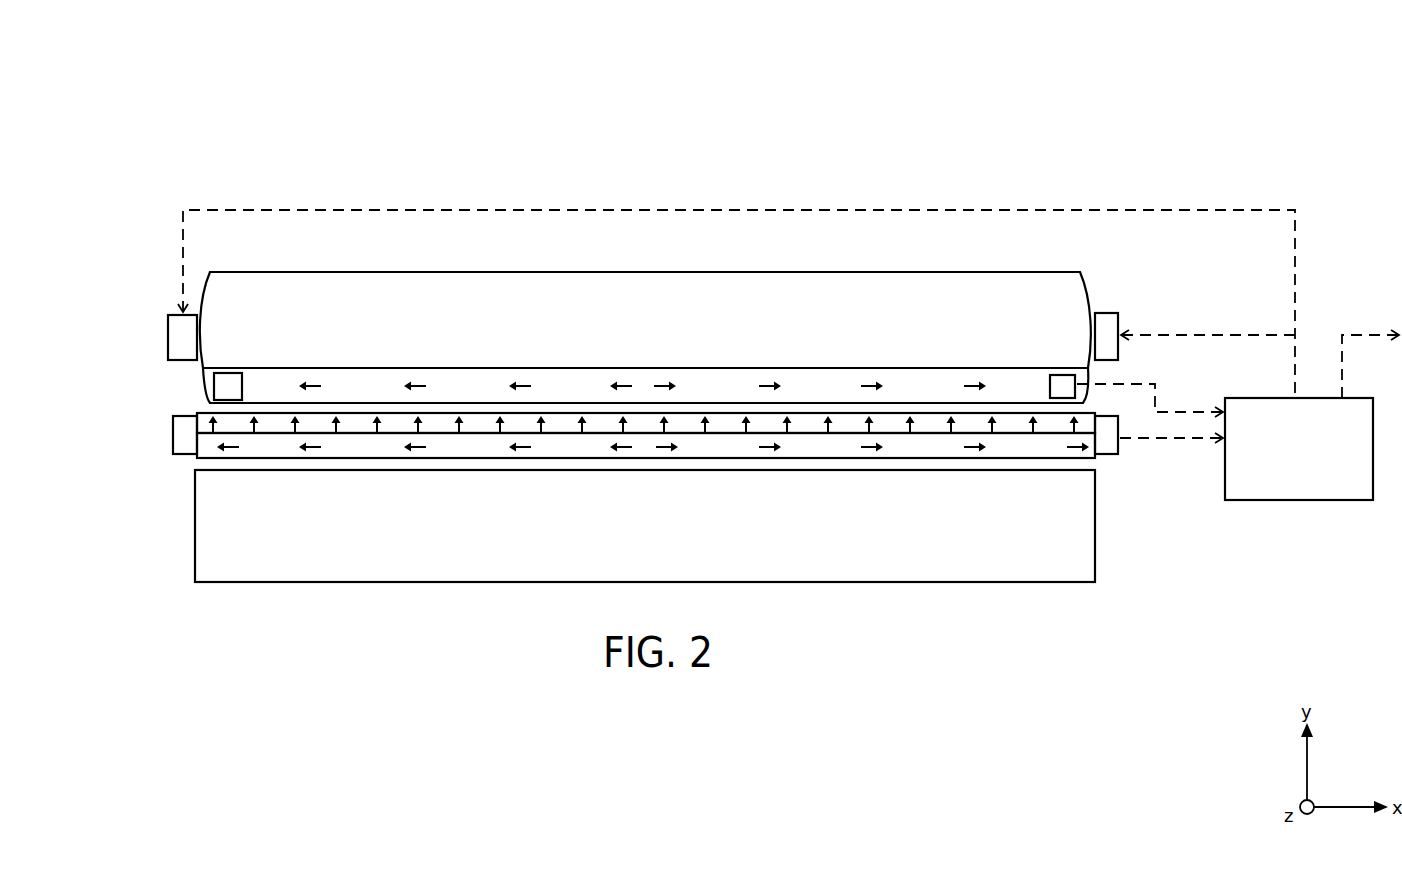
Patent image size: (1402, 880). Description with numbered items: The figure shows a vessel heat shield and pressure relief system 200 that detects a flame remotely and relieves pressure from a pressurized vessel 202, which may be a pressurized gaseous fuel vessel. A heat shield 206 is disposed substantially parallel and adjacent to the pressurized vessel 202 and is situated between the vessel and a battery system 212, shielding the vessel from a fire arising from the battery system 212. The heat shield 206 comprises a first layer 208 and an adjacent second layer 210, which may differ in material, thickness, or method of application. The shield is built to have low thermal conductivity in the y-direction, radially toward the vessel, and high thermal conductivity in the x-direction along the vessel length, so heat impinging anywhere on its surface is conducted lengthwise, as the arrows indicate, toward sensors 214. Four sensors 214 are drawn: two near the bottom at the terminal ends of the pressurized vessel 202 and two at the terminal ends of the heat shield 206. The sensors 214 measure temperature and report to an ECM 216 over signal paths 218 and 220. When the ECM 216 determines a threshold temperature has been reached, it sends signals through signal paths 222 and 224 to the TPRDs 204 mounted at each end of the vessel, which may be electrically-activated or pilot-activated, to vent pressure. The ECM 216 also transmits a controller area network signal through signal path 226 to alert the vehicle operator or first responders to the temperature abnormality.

The vessel heat shield and pressure relief system 200 is at (330, 68).
The pressurized vessel 202 is at (665, 351).
The TPRD 204 is at (172, 327).
The heat shield 206 is at (1088, 452).
The first layer 208 is at (205, 452).
The second layer 210 is at (198, 430).
The battery system 212 is at (665, 541).
The sensors 214 is at (217, 387).
The ECM 216 is at (1321, 464).
The signal path 218 is at (1163, 438).
The signal path 220 is at (1195, 410).
The signal path 222 is at (1247, 335).
The signal path 224 is at (1218, 210).
The signal path 226 is at (1370, 335).